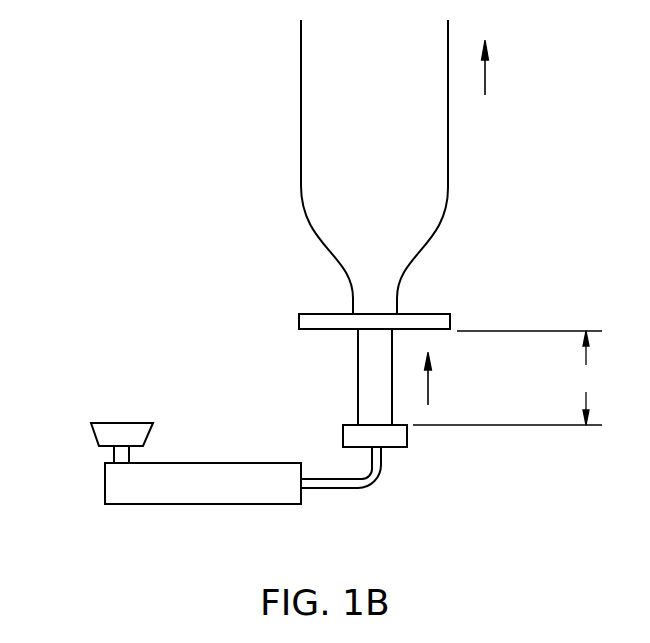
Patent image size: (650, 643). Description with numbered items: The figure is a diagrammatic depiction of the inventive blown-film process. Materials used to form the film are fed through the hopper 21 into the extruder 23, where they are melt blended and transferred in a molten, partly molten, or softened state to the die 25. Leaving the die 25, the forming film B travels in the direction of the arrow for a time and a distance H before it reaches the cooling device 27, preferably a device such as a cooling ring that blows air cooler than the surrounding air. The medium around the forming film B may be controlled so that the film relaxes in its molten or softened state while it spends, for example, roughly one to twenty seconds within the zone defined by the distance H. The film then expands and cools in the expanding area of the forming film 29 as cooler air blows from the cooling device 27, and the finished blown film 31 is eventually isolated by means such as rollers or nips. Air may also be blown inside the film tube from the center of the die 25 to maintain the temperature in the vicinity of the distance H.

The hopper 21 is at (105, 423).
The extruder 23 is at (127, 505).
The die 25 is at (407, 440).
The cooling device 27 is at (438, 311).
The expanding area of the forming film 29 is at (330, 257).
The blown film 31 is at (449, 148).
The forming film B is at (358, 367).
The distance H is at (507, 378).